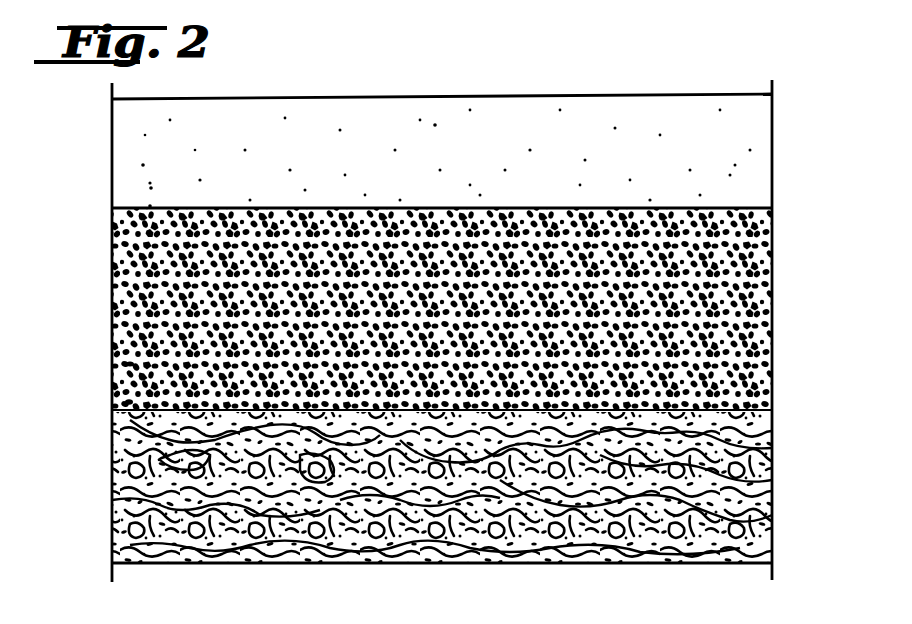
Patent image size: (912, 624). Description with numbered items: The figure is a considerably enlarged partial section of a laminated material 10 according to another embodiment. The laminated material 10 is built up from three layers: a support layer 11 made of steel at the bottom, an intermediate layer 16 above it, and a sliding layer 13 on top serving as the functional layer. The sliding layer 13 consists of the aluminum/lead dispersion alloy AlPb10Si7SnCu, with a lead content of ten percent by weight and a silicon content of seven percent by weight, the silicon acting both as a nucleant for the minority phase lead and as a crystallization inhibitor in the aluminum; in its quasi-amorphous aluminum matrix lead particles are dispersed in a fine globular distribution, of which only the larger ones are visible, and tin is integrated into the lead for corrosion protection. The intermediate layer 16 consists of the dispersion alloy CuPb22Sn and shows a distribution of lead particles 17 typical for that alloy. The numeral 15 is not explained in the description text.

The laminated material 10 is at (515, 87).
The support layer 11 is at (300, 462).
The sliding layer 13 is at (757, 155).
The dispersed particles in outer layer 15 is at (150, 189).
The intermediate layer 16 is at (779, 206).
The lead particles 17 is at (128, 364).